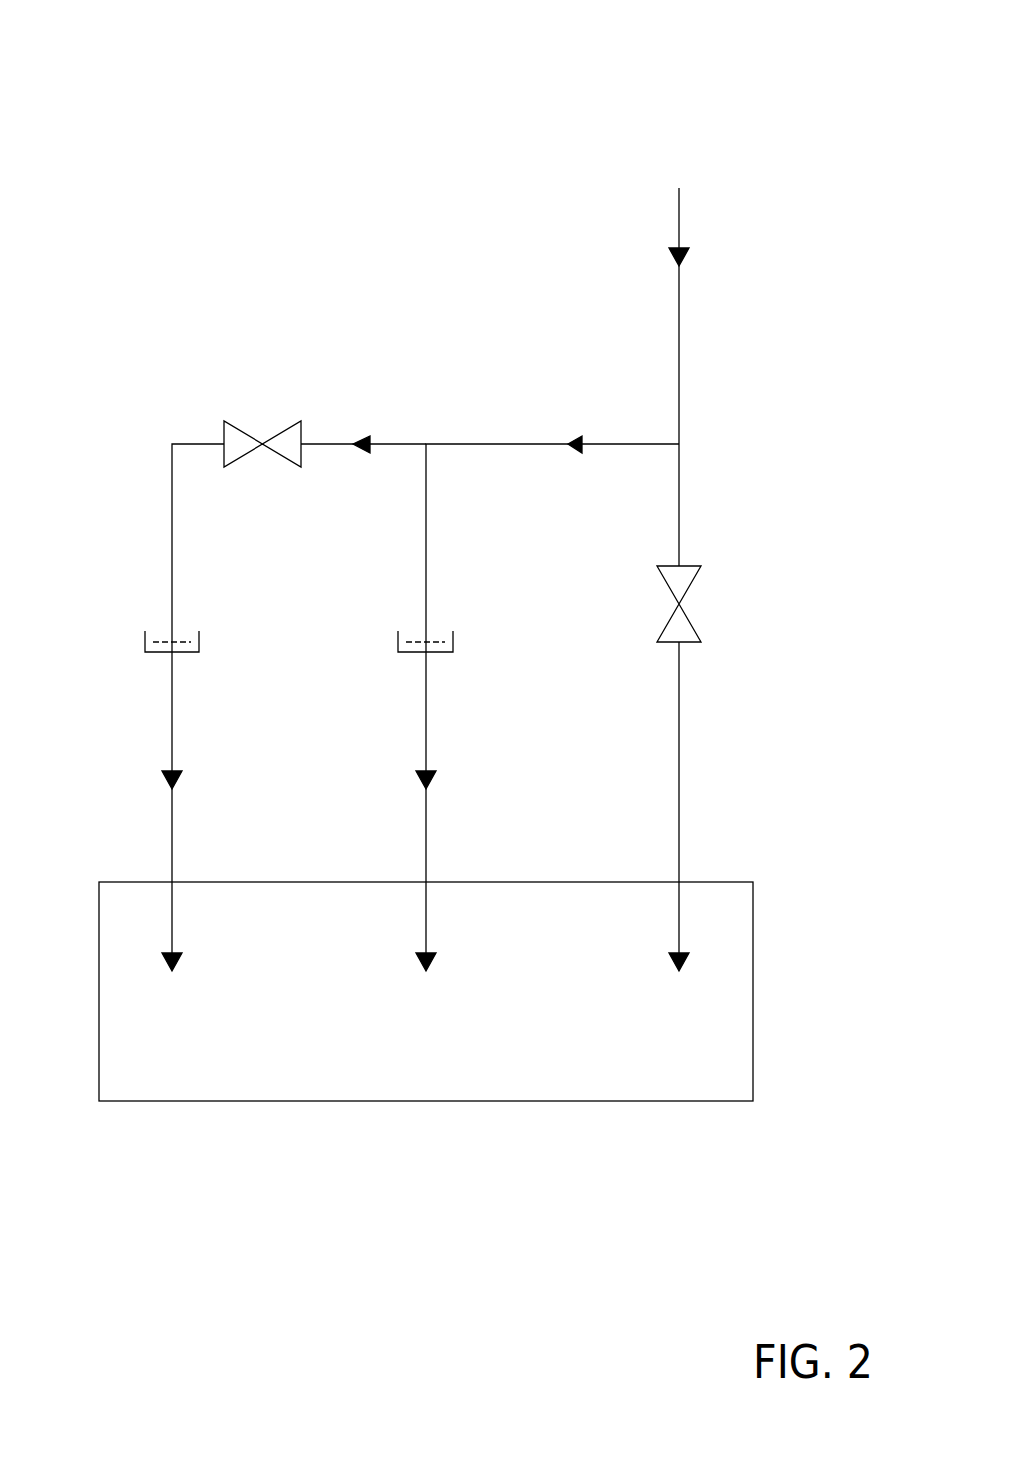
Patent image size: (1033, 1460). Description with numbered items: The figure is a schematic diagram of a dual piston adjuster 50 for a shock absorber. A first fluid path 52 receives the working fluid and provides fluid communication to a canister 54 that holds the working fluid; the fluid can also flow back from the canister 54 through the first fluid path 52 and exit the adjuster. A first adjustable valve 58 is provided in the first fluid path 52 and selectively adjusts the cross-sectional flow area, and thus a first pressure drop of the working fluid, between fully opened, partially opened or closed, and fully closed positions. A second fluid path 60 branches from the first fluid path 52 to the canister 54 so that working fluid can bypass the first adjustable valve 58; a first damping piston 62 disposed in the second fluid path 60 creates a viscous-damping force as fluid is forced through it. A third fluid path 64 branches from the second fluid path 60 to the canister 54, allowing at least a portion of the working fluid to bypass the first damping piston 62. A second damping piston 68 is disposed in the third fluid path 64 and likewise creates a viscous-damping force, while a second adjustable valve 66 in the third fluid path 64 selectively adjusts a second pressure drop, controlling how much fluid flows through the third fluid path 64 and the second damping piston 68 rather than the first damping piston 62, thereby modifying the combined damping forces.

The dual piston adjuster 50 is at (778, 61).
The first fluid path 52 is at (681, 265).
The canister 54 is at (753, 990).
The first adjustable valve 58 is at (690, 585).
The second fluid path 60 is at (568, 440).
The first damping piston 62 is at (398, 641).
The third fluid path 64 is at (353, 440).
The second adjustable valve 66 is at (224, 434).
The second damping piston 68 is at (145, 641).